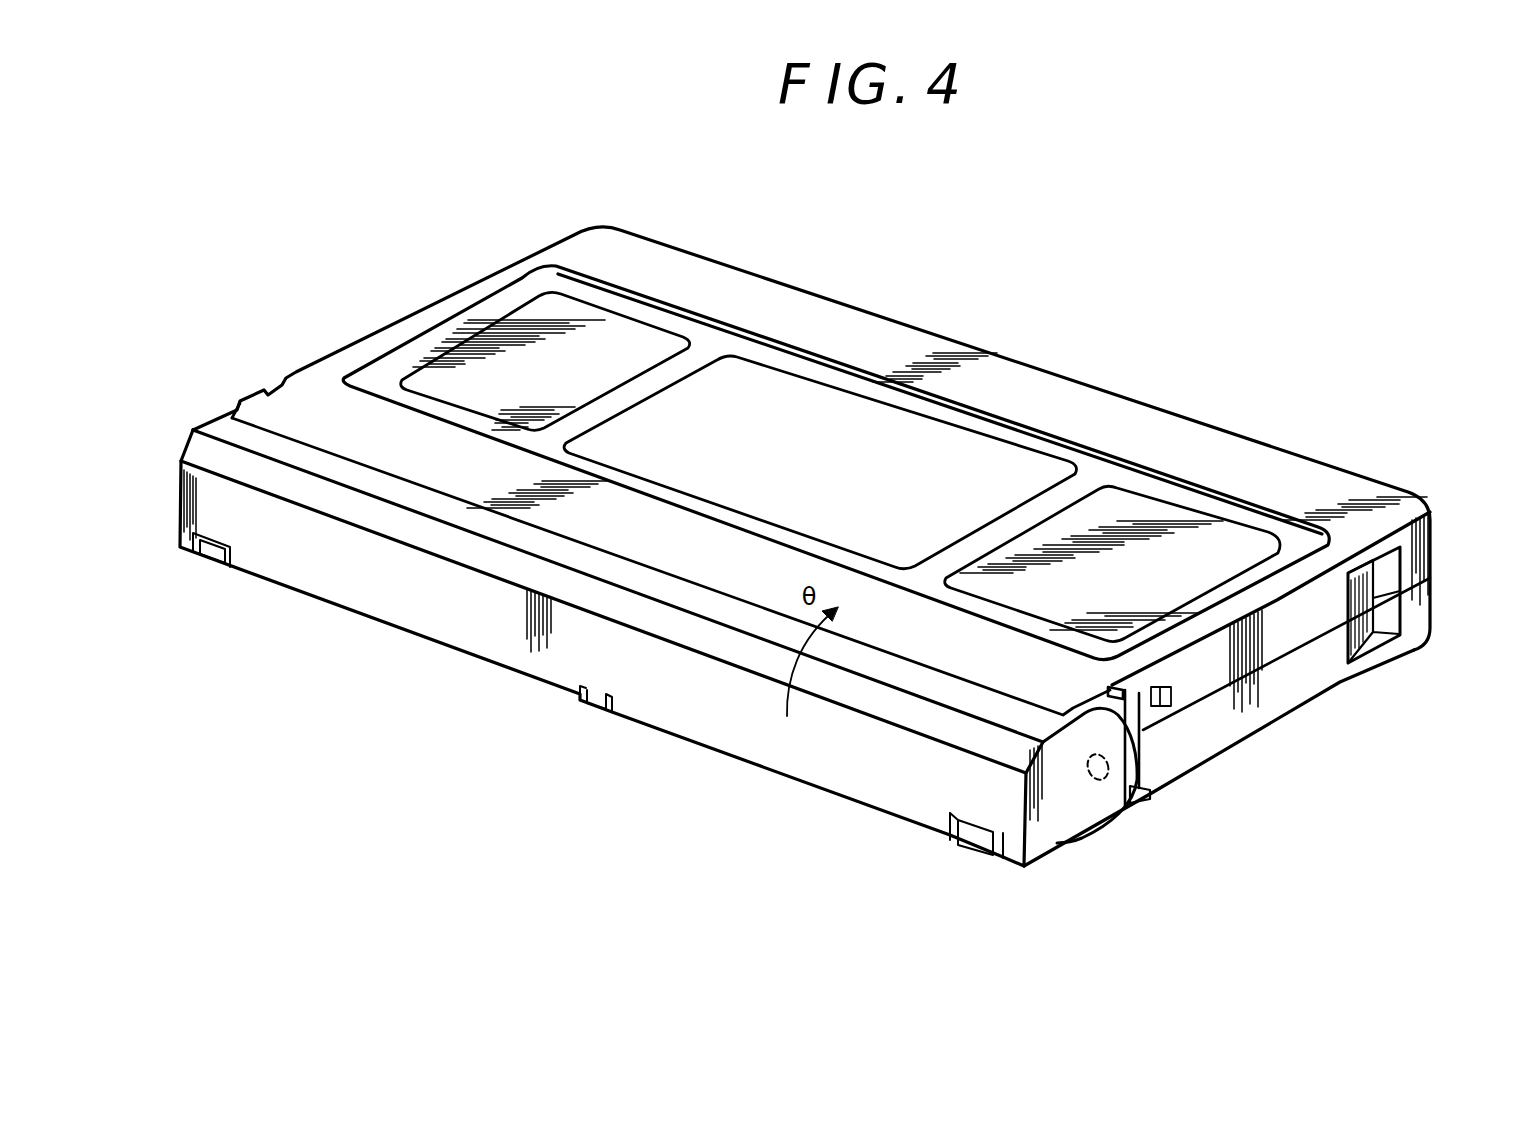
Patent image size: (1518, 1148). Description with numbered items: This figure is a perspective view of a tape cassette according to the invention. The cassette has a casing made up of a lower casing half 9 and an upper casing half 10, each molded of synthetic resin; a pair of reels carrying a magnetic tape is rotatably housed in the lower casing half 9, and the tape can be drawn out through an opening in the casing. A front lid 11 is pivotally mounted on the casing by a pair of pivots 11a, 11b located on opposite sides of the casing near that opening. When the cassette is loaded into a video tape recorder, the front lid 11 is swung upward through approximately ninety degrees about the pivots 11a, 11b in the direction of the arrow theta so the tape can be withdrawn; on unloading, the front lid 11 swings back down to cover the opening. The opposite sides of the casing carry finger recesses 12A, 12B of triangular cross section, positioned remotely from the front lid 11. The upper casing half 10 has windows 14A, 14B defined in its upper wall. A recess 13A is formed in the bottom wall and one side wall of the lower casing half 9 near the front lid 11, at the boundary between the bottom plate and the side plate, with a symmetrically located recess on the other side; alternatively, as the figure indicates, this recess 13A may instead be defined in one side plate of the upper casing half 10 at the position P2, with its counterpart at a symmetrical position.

The lower casing half 9 is at (1343, 670).
The upper casing half 10 is at (1327, 594).
The front lid 11 is at (802, 752).
The pivot 11a is at (1093, 777).
The pivot 11b is at (187, 447).
The finger recess 12A is at (1382, 605).
The finger recess 12B is at (503, 268).
The recess 13A is at (1143, 801).
The window 14A is at (1150, 513).
The window 14B is at (651, 354).
The position P2 is at (1172, 700).